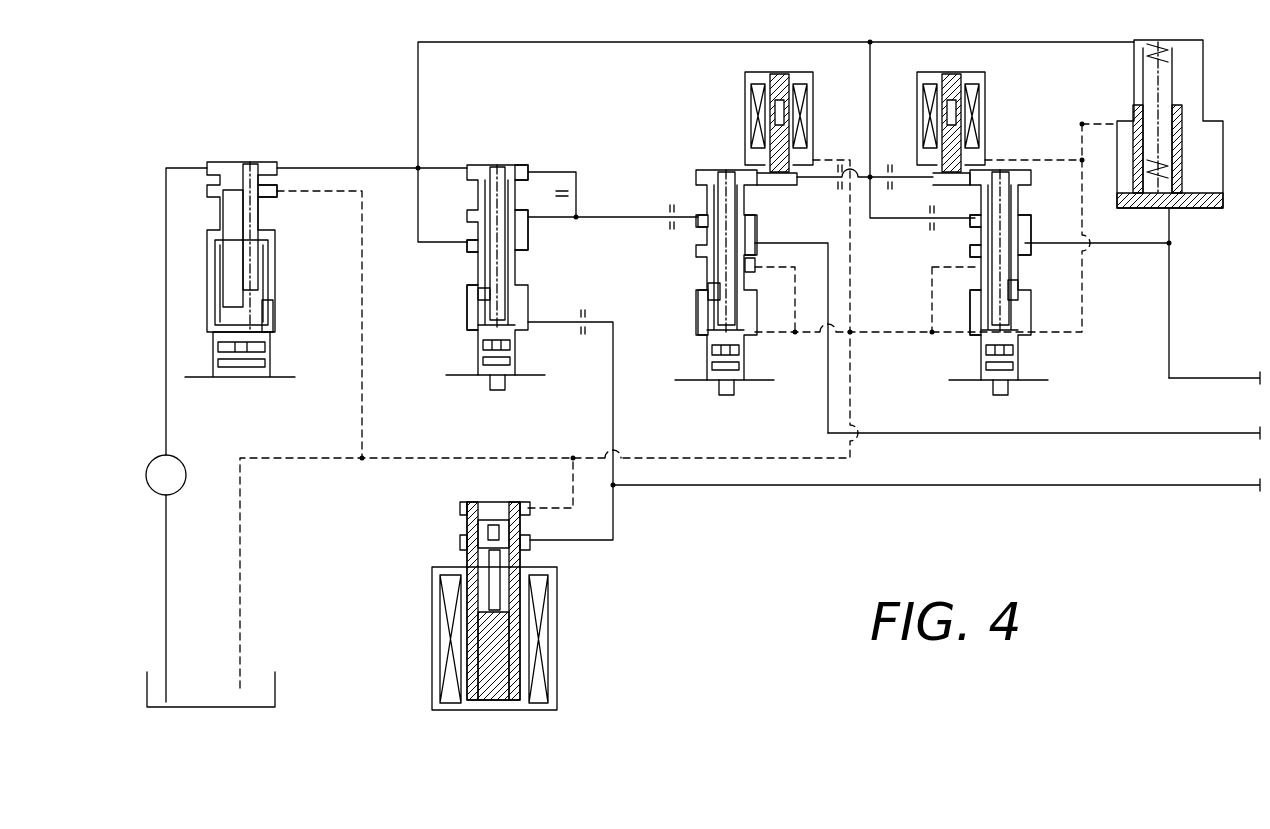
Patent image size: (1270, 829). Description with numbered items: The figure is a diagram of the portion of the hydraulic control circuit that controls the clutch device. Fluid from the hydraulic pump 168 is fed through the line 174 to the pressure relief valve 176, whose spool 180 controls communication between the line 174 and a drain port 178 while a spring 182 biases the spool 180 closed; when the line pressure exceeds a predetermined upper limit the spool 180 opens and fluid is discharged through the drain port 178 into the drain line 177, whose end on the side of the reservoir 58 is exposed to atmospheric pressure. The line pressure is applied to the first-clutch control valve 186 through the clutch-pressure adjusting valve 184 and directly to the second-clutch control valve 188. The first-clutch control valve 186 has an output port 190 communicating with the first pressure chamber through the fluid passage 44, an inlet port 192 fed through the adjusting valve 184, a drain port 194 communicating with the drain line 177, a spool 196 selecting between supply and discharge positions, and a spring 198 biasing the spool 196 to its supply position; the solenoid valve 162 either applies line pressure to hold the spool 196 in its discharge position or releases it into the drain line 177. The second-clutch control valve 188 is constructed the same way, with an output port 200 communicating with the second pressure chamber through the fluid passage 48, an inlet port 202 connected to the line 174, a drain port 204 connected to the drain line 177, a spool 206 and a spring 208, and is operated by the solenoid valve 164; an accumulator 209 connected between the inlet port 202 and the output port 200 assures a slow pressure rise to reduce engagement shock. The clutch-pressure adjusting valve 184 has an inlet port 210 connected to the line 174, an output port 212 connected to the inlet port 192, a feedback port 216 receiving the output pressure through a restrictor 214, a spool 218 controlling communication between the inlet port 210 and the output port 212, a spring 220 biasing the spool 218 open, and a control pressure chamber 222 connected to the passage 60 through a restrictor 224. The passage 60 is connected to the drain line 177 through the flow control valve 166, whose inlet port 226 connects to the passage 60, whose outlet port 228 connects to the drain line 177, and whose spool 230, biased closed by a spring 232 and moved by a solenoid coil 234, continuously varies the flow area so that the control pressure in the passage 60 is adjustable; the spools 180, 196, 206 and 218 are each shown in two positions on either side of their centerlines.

The fluid passage 44 is at (1139, 433).
The fluid passage 48 is at (1186, 378).
The reservoir 58 is at (275, 685).
The fluid passage 60 is at (1146, 485).
The solenoid valve 162 is at (792, 70).
The solenoid valve 164 is at (964, 70).
The flow control valve 166 is at (425, 572).
The hydraulic pump 168 is at (183, 470).
The line 174 is at (362, 168).
The pressure relief valve 176 is at (205, 160).
The drain line 177 is at (336, 460).
The drain port 178 is at (272, 192).
The spool 180 is at (258, 212).
The spring 182 is at (270, 328).
The clutch-pressure adjusting valve 184 is at (460, 163).
The first-clutch control valve 186 is at (690, 344).
The second-clutch control valve 188 is at (965, 345).
The output port 190 is at (755, 243).
The inlet port 192 is at (700, 216).
The drain port 194 is at (755, 267).
The spool 196 is at (710, 286).
The spring 198 is at (710, 312).
The output port 200 is at (1028, 245).
The inlet port 202 is at (974, 220).
The drain port 204 is at (972, 266).
The spool 206 is at (1016, 284).
The spring 208 is at (976, 318).
The accumulator 209 is at (1210, 130).
The inlet port 210 is at (467, 249).
The output port 212 is at (525, 226).
The restrictor 214 is at (578, 193).
The feedback port 216 is at (527, 170).
The spool 218 is at (505, 180).
The spring 220 is at (478, 294).
The control pressure chamber 222 is at (478, 320).
The restrictor 224 is at (588, 318).
The inlet port 226 is at (530, 541).
The outlet port 228 is at (522, 502).
The spool 230 is at (512, 556).
The spring 232 is at (500, 624).
The solenoid coil 234 is at (545, 652).